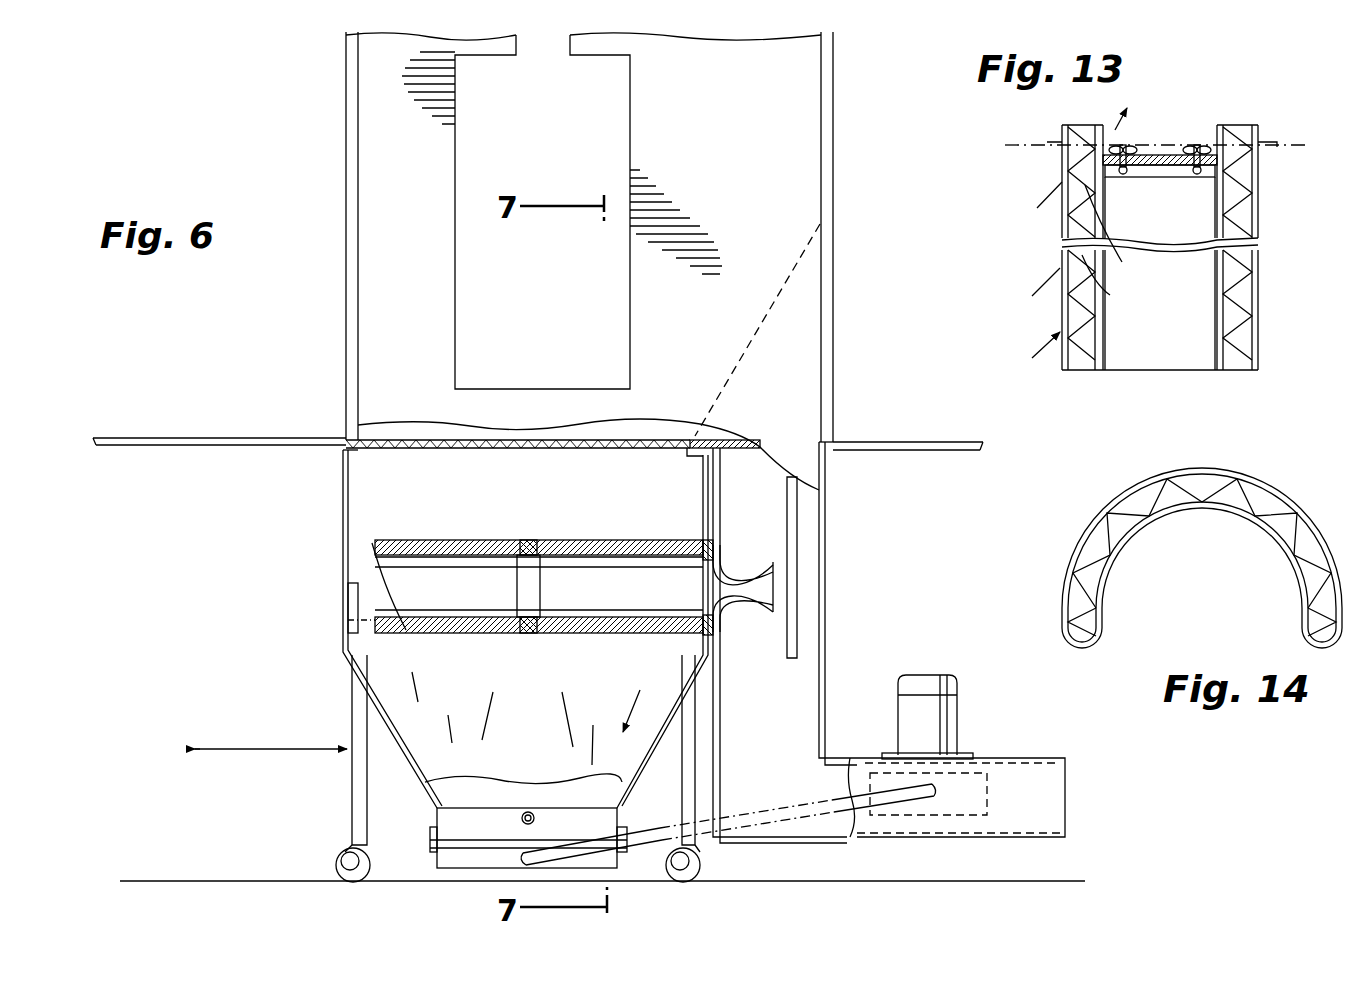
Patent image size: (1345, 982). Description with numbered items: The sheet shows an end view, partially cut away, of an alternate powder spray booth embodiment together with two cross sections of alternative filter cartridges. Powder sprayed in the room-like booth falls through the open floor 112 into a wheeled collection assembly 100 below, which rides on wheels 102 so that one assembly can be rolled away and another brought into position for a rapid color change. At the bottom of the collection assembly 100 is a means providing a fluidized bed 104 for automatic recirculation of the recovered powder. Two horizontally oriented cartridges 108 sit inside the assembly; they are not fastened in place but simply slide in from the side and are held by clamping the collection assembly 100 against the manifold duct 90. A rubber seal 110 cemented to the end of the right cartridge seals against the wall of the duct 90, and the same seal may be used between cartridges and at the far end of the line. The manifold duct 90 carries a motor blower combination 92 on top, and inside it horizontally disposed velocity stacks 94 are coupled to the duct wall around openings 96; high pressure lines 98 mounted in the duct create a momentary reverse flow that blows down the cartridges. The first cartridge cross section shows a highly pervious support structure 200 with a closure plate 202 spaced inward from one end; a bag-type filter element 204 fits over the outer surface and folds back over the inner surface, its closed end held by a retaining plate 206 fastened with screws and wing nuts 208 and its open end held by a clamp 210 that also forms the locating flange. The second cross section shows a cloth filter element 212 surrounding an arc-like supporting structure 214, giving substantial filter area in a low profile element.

In FIG. 6, the manifold duct 90 is at (825, 535).
In FIG. 6, the motor blower combination 92 is at (957, 684).
In FIG. 6, the velocity stacks 94 is at (736, 574).
In FIG. 6, the openings 96 is at (740, 596).
In FIG. 6, the high pressure lines 98 is at (797, 612).
In FIG. 6, the collection assembly 100 is at (343, 517).
In FIG. 6, the wheels 102 is at (343, 858).
In FIG. 6, the fluidized bed 104 is at (457, 828).
In FIG. 6, the cartridges 108 is at (447, 540).
In FIG. 6, the rubber seal 110 is at (530, 540).
In FIG. 6, the floor 112 is at (618, 440).
In FIG. 13, the support structure 200 is at (1083, 170).
In FIG. 13, the closure plate 202 is at (1175, 158).
In FIG. 13, the filter element 204 is at (1062, 215).
In FIG. 13, the retaining plate 206 is at (1165, 168).
In FIG. 13, the screws and wing nuts 208 is at (1130, 146).
In FIG. 13, the clamp 210 is at (1062, 138).
In FIG. 14, the filter element 212 is at (1295, 500).
In FIG. 14, the arc-like supporting structure 214 is at (1228, 470).